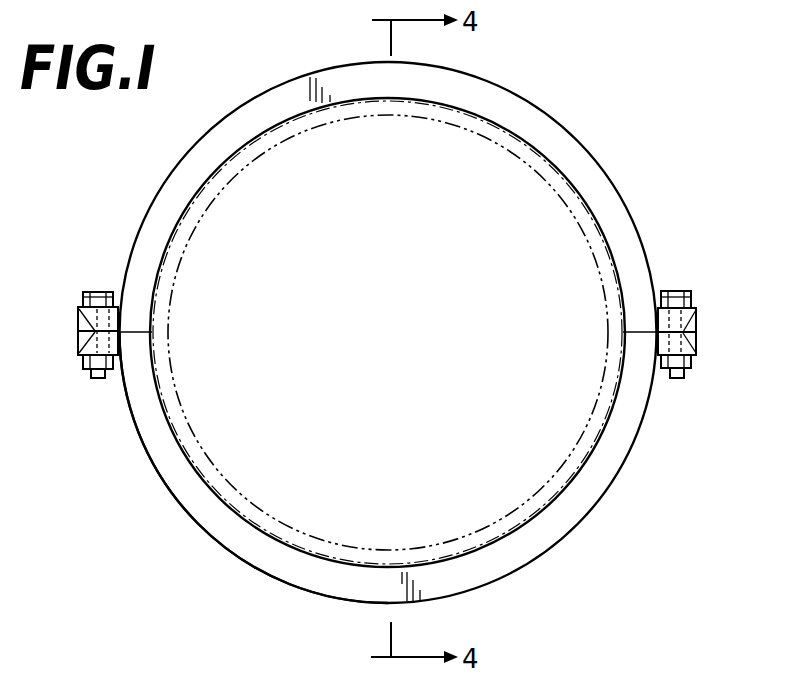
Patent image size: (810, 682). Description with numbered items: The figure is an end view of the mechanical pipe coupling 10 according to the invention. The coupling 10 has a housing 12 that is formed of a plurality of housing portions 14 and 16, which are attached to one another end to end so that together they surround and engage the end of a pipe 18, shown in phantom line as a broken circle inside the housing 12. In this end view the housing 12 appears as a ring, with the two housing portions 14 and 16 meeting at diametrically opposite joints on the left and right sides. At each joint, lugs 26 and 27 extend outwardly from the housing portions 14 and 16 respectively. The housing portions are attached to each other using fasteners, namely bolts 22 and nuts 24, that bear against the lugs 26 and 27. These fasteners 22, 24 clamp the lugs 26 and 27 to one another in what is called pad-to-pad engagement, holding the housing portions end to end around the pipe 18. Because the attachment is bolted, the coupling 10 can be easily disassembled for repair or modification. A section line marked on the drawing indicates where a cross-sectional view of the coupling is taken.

The mechanical pipe coupling 10 is at (690, 93).
The housing 12 is at (628, 206).
The housing portion 14 is at (533, 126).
The housing portion 16 is at (593, 498).
The pipe 18 is at (240, 498).
The bolt 22 is at (694, 294).
The nut 24 is at (690, 369).
The lug 26 is at (694, 308).
The lug 27 is at (694, 355).